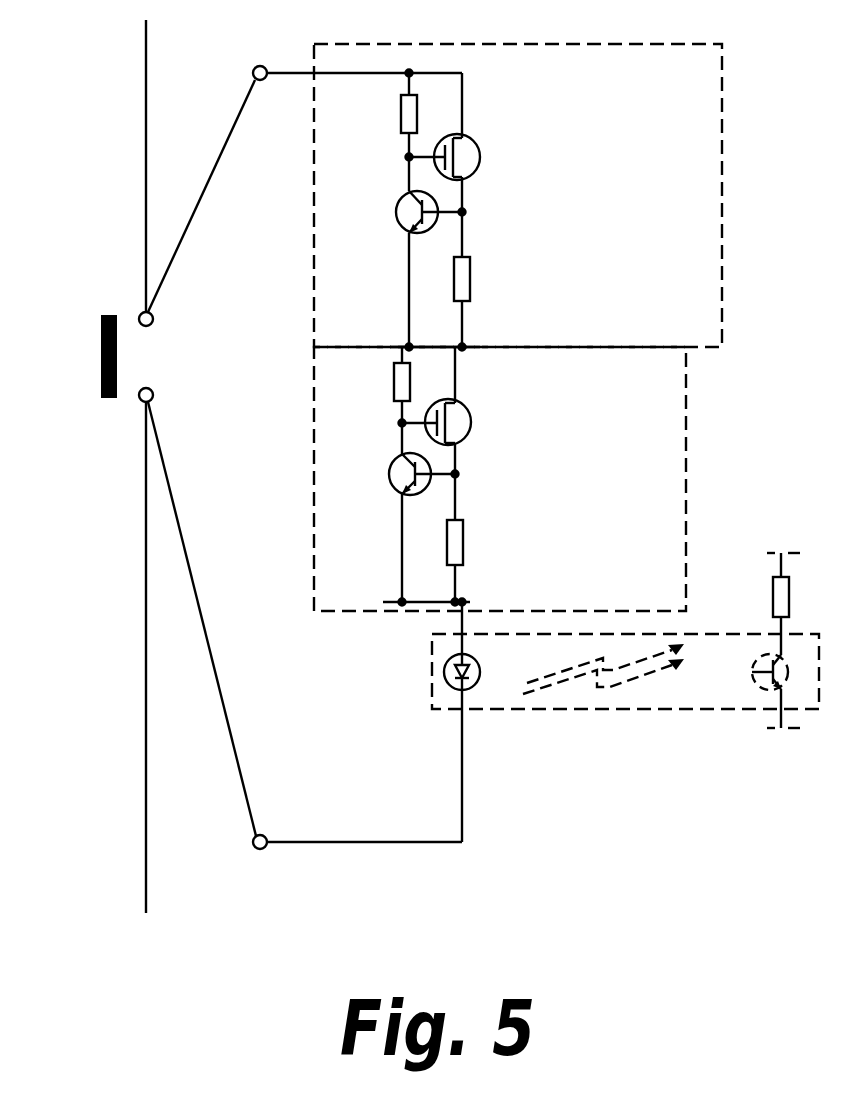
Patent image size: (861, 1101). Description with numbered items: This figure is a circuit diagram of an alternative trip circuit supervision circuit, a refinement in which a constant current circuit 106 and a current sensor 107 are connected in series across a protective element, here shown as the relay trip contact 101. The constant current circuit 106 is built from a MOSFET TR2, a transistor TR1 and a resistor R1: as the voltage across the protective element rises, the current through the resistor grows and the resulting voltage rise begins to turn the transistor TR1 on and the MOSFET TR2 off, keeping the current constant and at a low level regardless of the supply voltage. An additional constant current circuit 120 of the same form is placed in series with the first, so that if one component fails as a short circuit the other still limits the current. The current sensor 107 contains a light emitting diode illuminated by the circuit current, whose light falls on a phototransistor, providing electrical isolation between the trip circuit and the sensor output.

The switch / push button 101 is at (99, 356).
The constant current circuit 106 is at (556, 197).
The additional constant current circuit 120 is at (687, 457).
The current sensor 107 is at (665, 712).
The transistor TR1 is at (406, 212).
The transistor TR2 is at (470, 165).
The resistor R1 is at (481, 279).